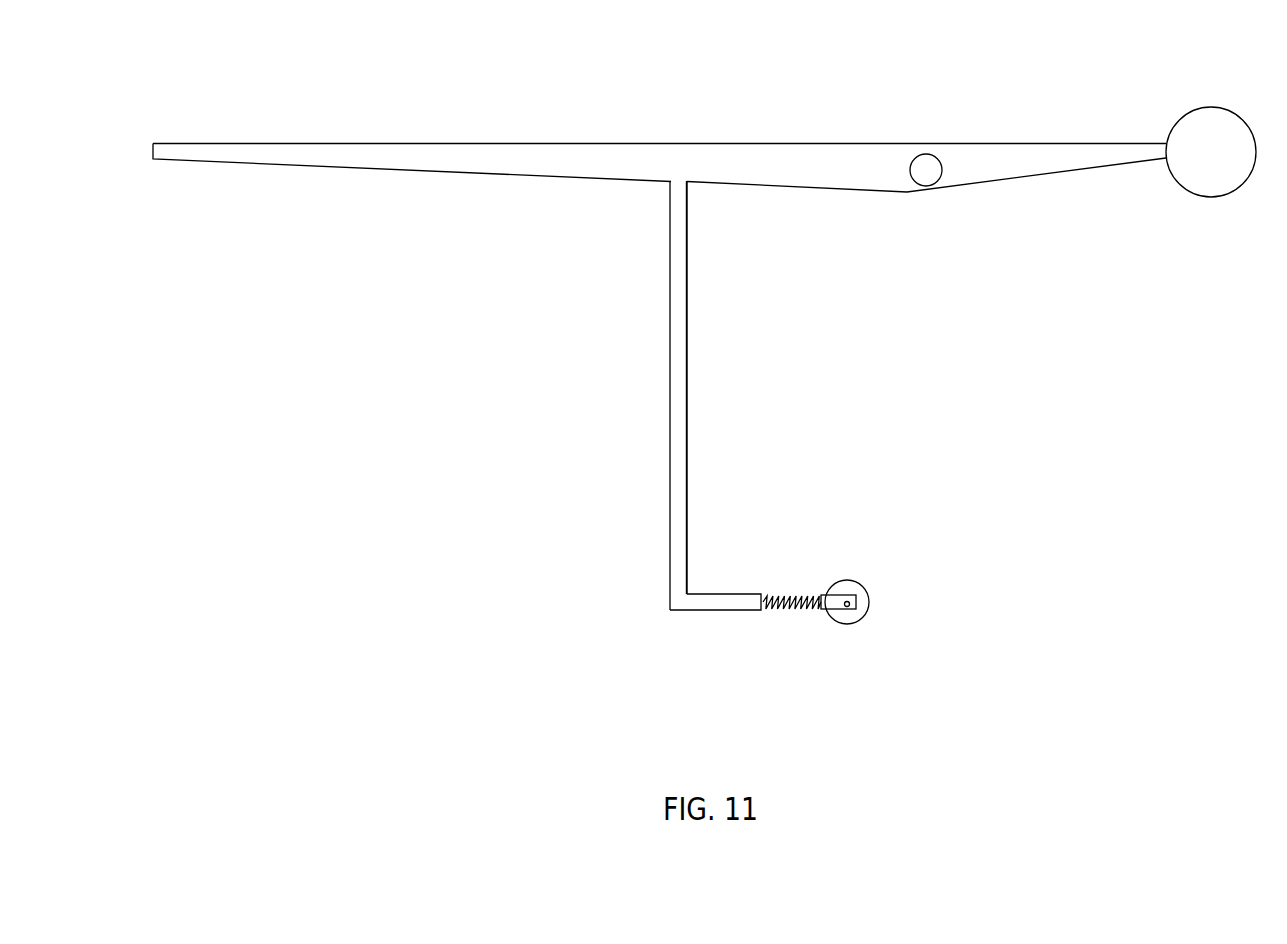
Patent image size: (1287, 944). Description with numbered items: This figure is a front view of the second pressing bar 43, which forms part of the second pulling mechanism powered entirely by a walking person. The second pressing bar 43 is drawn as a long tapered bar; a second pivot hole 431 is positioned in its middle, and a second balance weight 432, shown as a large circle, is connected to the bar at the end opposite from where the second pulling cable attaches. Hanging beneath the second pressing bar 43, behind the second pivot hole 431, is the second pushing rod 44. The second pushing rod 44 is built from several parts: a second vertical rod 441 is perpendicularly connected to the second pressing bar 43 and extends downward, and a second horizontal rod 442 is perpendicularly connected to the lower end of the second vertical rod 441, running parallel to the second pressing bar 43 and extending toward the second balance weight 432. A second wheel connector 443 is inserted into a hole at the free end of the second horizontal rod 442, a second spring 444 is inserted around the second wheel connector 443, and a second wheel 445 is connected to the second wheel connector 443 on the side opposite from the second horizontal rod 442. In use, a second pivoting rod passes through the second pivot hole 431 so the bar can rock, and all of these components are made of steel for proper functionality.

The second pressing bar 43 is at (704, 168).
The second pivot hole 431 is at (925, 176).
The second balance weight 432 is at (1198, 127).
The second pushing rod 44 is at (734, 402).
The second vertical rod 441 is at (675, 372).
The second horizontal rod 442 is at (724, 602).
The second wheel connector 443 is at (821, 600).
The second spring 444 is at (788, 598).
The second wheel 445 is at (863, 595).